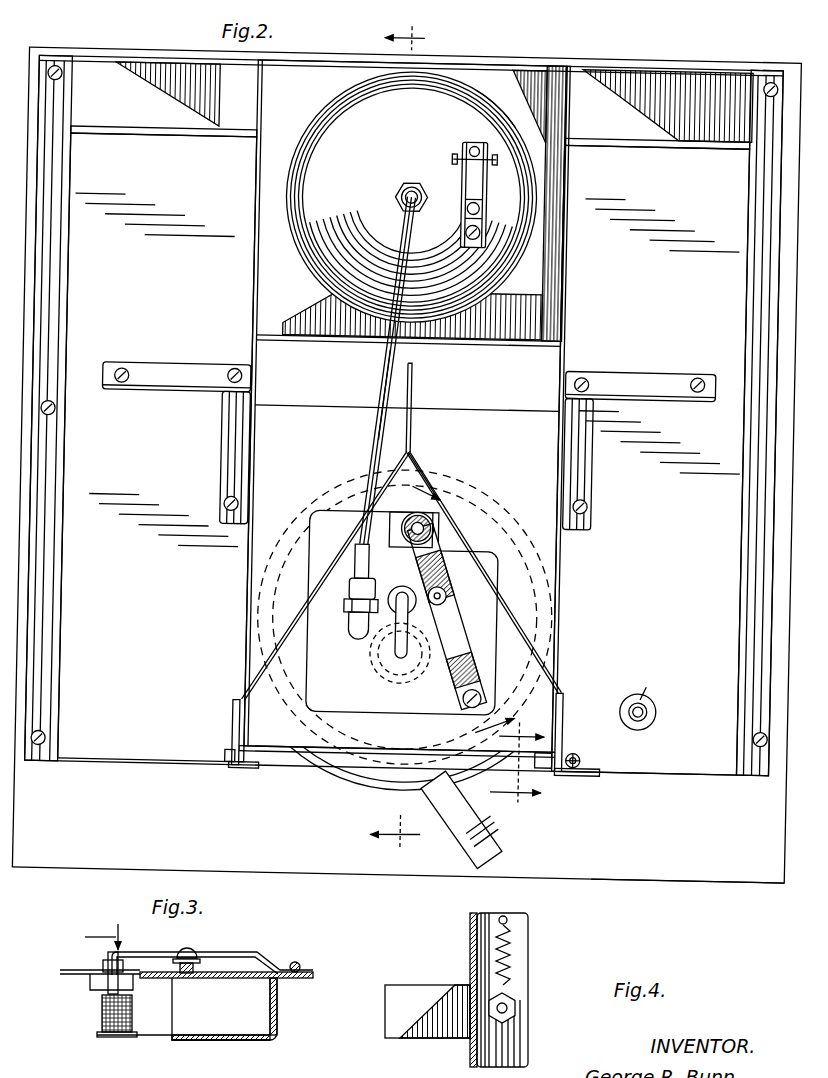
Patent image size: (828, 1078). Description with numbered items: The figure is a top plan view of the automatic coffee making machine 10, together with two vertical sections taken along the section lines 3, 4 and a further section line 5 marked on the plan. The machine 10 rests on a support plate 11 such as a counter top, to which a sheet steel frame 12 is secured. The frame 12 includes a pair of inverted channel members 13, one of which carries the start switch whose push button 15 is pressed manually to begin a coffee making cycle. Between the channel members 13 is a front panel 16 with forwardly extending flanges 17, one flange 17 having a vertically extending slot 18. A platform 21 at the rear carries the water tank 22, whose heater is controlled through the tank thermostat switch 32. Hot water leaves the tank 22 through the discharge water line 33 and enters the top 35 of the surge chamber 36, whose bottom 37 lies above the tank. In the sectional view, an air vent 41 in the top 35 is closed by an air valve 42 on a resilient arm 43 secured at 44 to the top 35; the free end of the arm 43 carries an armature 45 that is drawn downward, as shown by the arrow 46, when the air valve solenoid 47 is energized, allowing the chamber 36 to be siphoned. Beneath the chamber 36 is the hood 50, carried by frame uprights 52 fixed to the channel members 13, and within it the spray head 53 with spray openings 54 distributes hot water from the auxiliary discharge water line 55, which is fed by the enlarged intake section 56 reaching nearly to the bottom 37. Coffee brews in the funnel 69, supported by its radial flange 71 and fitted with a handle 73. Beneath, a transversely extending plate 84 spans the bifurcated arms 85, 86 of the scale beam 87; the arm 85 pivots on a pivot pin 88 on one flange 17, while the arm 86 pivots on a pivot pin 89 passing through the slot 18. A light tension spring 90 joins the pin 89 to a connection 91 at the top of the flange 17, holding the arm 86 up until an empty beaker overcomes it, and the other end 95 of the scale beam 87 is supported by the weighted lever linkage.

In FIG. 2, the section line 3— 3 is at (455, 607).
In FIG. 2, the section line 4— 4 is at (517, 762).
In FIG. 2, the section line 5— 5 is at (402, 440).
In FIG. 2, the automatic coffee making machine 10 is at (736, 50).
In FIG. 2, the support plate 11 is at (729, 872).
In FIG. 2, the frame 12 is at (117, 784).
In FIG. 2, the inverted channel members 13 is at (141, 511).
In FIG. 2, the push button 15 is at (662, 707).
In FIG. 2, the front panel 16 is at (286, 756).
In FIG. 4, the front panel 16 is at (472, 967).
In FIG. 2, the flanges 17 is at (246, 772).
In FIG. 4, the flanges 17 is at (522, 960).
In FIG. 4, the slot 18 is at (515, 1000).
In FIG. 2, the platform 21 is at (552, 230).
In FIG. 2, the water tank 22 is at (493, 118).
In FIG. 2, the tank thermostat switch 32 is at (484, 190).
In FIG. 2, the discharge water line 33 is at (396, 248).
In FIG. 2, the top of surge chamber 35 is at (351, 167).
In FIG. 3, the top of surge chamber 35 is at (238, 971).
In FIG. 2, the surge chamber 36 is at (308, 112).
In FIG. 3, the surge chamber 36 is at (284, 1003).
In FIG. 3, the bottom of surge chamber 37 is at (205, 1040).
In FIG. 3, the air vent 41 is at (191, 961).
In FIG. 2, the air valve 42 is at (447, 589).
In FIG. 3, the air valve 42 is at (182, 954).
In FIG. 2, the resilient arm 43 is at (486, 659).
In FIG. 3, the resilient arm 43 is at (140, 952).
In FIG. 2, the securing point 44 is at (488, 678).
In FIG. 3, the securing point 44 is at (302, 967).
In FIG. 2, the armature 45 is at (432, 518).
In FIG. 3, the armature 45 is at (125, 990).
In FIG. 3, the arrow 46 is at (88, 937).
In FIG. 2, the air valve solenoid 47 is at (425, 520).
In FIG. 3, the air valve solenoid 47 is at (100, 1020).
In FIG. 2, the hood 50 is at (507, 456).
In FIG. 2, the frame uprights 52 is at (249, 445).
In FIG. 2, the spray head 53 is at (400, 686).
In FIG. 2, the spray openings 54 is at (468, 692).
In FIG. 2, the auxiliary discharge water line 55 is at (398, 620).
In FIG. 2, the enlarged intake section 56 is at (375, 591).
In FIG. 2, the funnel 69 is at (327, 782).
In FIG. 2, the radial flange 71 is at (362, 782).
In FIG. 2, the handle 73 is at (503, 838).
In FIG. 2, the transversely extending plate 84 is at (445, 461).
In FIG. 2, the arm 85 is at (289, 650).
In FIG. 2, the arm 86 is at (534, 652).
In FIG. 4, the arm 86 is at (400, 1038).
In FIG. 2, the scale beam 87 is at (393, 437).
In FIG. 2, the pivot pin 88 is at (232, 755).
In FIG. 2, the pivot pin 89 is at (541, 759).
In FIG. 4, the pivot pin 89 is at (520, 1008).
In FIG. 2, the tension spring 90 is at (590, 757).
In FIG. 4, the tension spring 90 is at (512, 940).
In FIG. 2, the connection 91 is at (583, 750).
In FIG. 4, the connection 91 is at (506, 917).
In FIG. 2, the other end of scale beam 95 is at (412, 370).